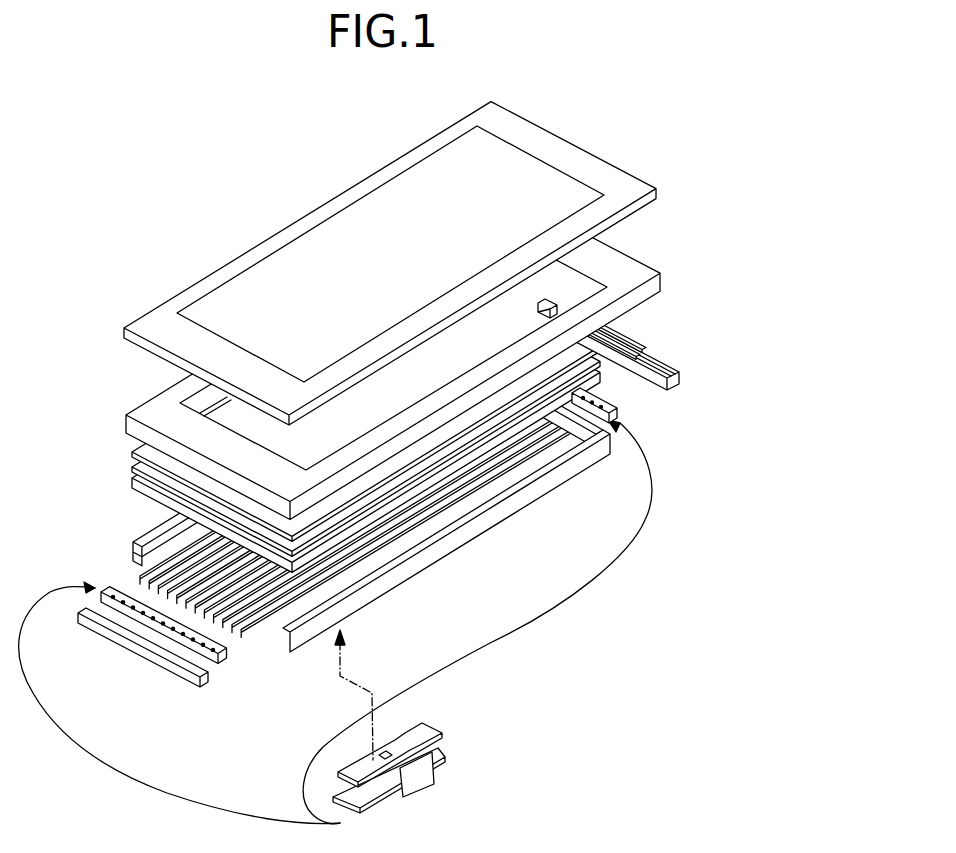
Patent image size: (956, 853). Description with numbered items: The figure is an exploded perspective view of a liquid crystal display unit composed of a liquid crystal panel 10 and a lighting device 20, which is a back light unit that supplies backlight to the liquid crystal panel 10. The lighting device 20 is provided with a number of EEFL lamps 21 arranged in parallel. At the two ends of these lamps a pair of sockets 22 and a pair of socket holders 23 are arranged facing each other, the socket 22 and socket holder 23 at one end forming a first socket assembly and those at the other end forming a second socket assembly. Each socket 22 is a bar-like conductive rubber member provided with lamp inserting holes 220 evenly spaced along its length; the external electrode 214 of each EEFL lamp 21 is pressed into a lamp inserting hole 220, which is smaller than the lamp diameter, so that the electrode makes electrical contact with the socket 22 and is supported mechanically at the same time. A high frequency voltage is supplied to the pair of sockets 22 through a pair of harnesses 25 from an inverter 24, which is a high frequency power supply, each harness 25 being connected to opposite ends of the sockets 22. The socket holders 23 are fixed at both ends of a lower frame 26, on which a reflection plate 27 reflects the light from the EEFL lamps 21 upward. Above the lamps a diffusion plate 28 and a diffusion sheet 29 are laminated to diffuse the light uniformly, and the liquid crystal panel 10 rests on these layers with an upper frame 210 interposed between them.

The liquid crystal panel 10 is at (612, 143).
The upper frame 210 is at (640, 260).
The lighting device 20 is at (703, 490).
The EEFL lamps 21 is at (521, 461).
The socket 22 is at (620, 412).
The socket holder 23 is at (167, 667).
The inverter 24 is at (403, 797).
The harness 25 is at (615, 568).
The lower frame 26 is at (377, 603).
The reflection plate 27 is at (437, 542).
The diffusion plate 28 is at (640, 356).
The diffusion sheet 29 is at (640, 346).
The external electrode 214 is at (143, 577).
The lamp inserting holes 220 is at (120, 603).